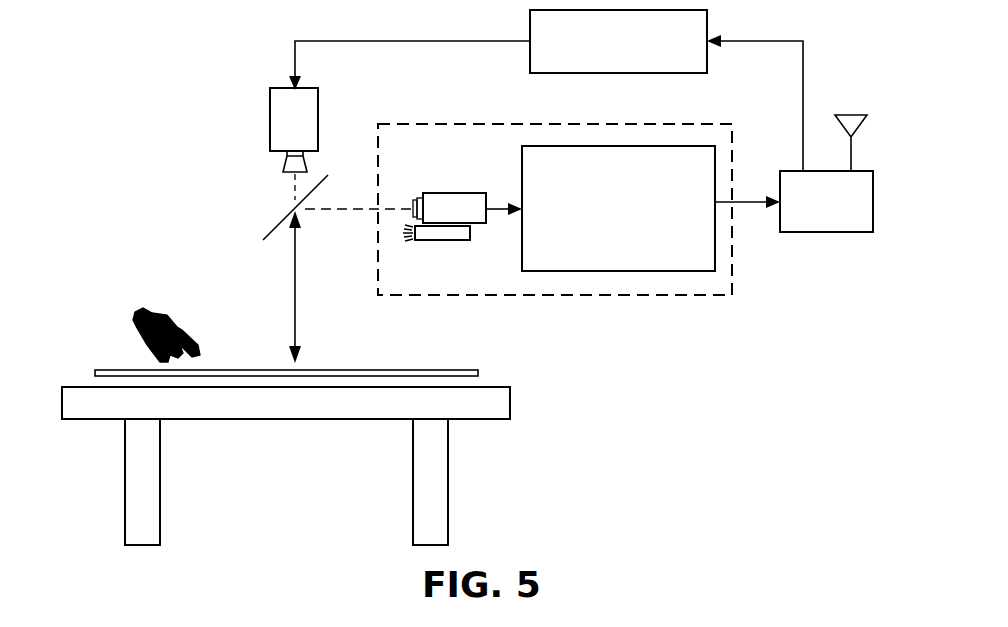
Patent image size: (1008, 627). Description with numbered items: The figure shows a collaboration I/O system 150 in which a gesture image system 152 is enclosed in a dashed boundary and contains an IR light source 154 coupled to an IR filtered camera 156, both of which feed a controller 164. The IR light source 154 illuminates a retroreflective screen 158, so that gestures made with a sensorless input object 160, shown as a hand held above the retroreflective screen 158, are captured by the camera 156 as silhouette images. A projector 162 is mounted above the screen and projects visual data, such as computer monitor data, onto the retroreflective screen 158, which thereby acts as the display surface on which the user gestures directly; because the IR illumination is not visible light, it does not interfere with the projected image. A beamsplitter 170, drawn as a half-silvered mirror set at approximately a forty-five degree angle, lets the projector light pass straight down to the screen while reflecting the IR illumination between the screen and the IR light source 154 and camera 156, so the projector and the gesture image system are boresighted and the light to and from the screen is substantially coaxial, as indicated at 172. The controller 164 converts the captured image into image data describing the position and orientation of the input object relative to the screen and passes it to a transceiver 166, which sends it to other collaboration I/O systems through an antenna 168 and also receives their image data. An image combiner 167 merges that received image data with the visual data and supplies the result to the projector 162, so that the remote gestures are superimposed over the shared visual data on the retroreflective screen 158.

The collaboration I/O system 150 is at (106, 72).
The gesture image system 152 is at (540, 296).
The IR light source 154 is at (440, 240).
The IR filtered camera 156 is at (440, 193).
The retroreflective screen 158 is at (445, 370).
The sensorless input object 160 is at (172, 318).
The projector 162 is at (318, 90).
The controller 164 is at (668, 272).
The transceiver 166 is at (810, 232).
The image combiner 167 is at (668, 73).
The antenna 168 is at (852, 113).
The beamsplitter 170 is at (272, 231).
The coaxial light path 172 is at (296, 300).